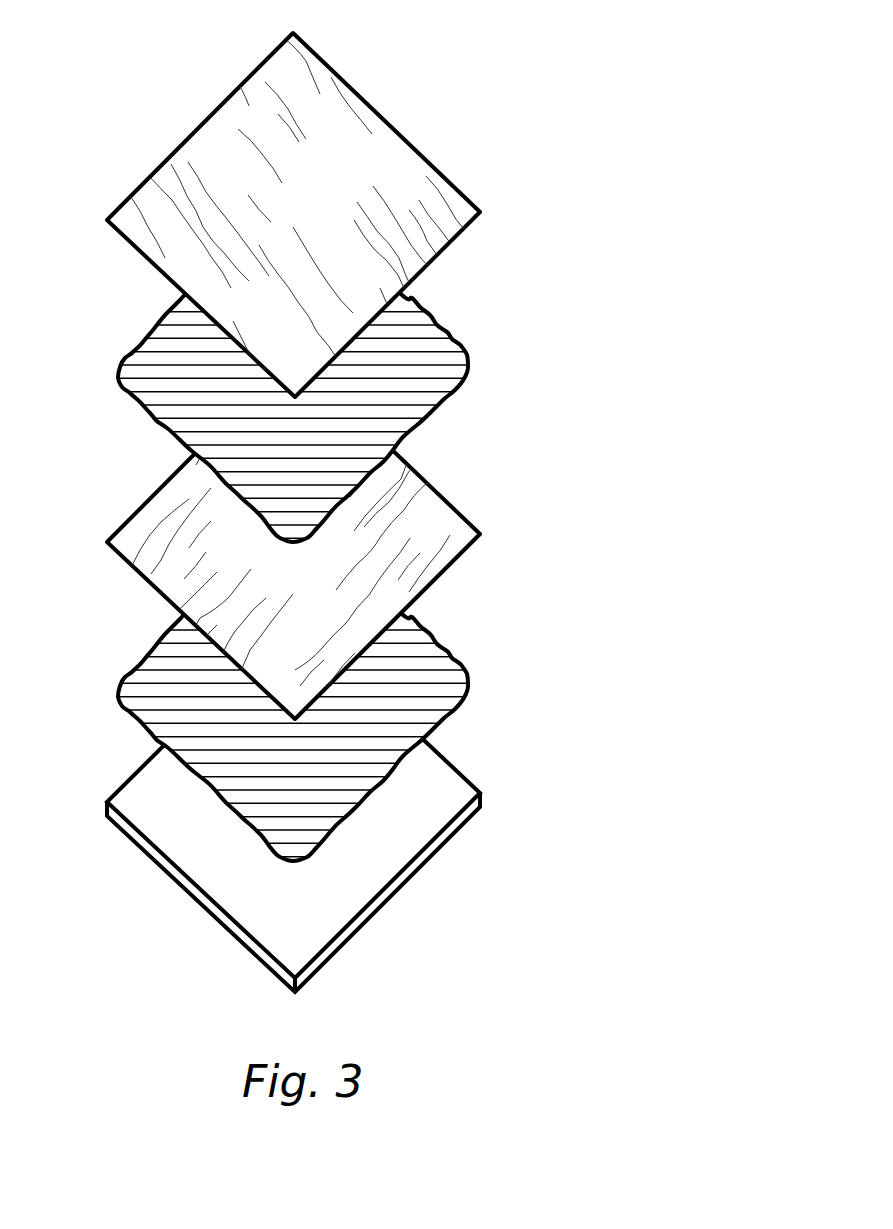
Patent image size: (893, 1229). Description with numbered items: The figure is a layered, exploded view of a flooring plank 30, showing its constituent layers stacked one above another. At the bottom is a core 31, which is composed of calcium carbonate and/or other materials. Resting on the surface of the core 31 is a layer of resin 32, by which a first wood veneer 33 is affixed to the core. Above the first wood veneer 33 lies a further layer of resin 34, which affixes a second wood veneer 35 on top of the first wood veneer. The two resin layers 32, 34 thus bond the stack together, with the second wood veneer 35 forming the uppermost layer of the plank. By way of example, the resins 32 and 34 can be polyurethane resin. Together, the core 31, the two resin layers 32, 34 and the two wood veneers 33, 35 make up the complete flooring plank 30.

The flooring plank 30 is at (132, 82).
The core 31 is at (440, 788).
The layer of resin 32 is at (425, 675).
The first wood veneer 33 is at (415, 508).
The layer of resin 34 is at (415, 350).
The second wood veneer 35 is at (417, 180).